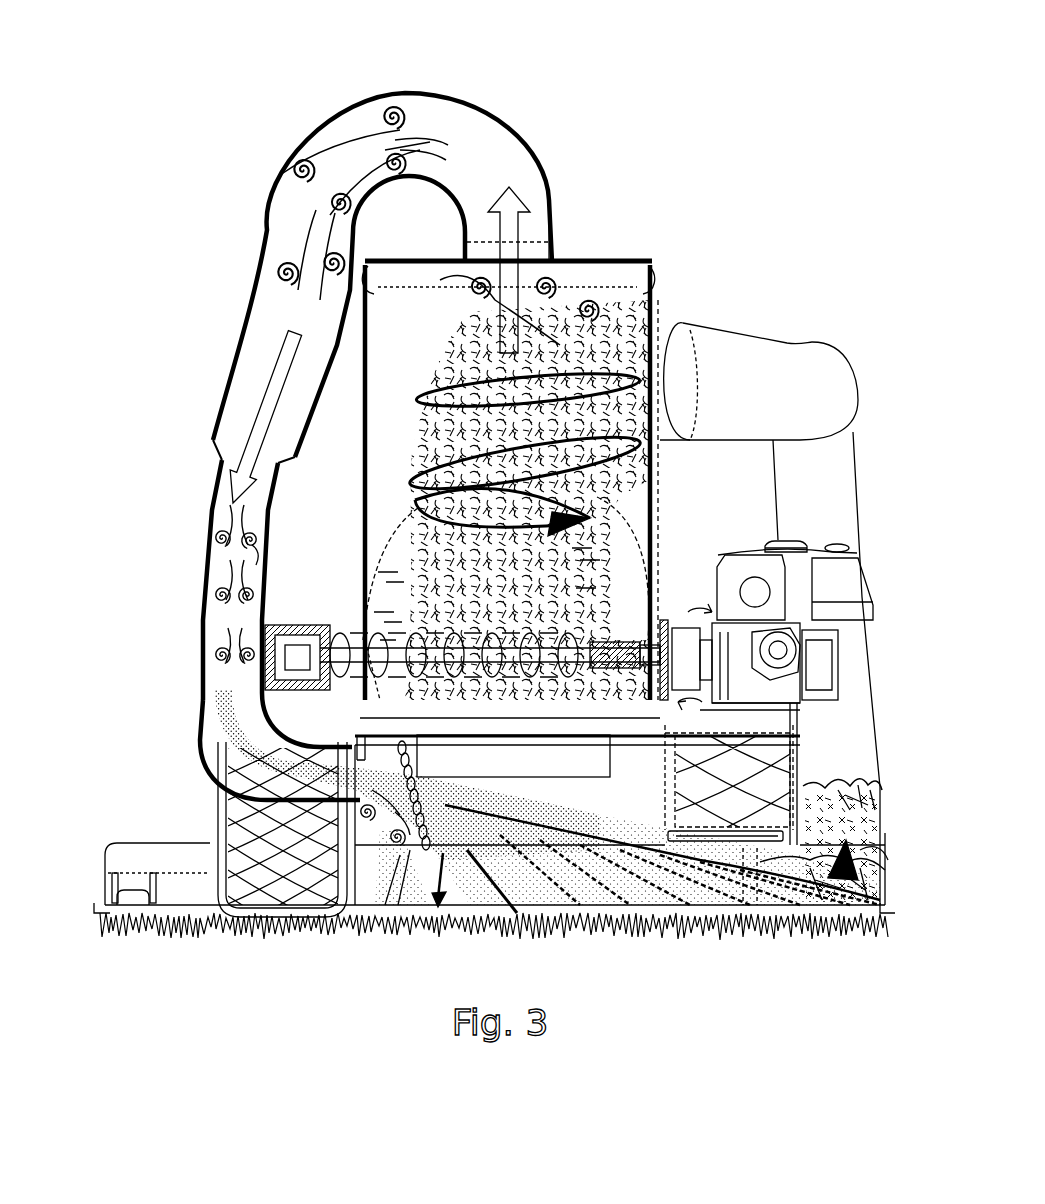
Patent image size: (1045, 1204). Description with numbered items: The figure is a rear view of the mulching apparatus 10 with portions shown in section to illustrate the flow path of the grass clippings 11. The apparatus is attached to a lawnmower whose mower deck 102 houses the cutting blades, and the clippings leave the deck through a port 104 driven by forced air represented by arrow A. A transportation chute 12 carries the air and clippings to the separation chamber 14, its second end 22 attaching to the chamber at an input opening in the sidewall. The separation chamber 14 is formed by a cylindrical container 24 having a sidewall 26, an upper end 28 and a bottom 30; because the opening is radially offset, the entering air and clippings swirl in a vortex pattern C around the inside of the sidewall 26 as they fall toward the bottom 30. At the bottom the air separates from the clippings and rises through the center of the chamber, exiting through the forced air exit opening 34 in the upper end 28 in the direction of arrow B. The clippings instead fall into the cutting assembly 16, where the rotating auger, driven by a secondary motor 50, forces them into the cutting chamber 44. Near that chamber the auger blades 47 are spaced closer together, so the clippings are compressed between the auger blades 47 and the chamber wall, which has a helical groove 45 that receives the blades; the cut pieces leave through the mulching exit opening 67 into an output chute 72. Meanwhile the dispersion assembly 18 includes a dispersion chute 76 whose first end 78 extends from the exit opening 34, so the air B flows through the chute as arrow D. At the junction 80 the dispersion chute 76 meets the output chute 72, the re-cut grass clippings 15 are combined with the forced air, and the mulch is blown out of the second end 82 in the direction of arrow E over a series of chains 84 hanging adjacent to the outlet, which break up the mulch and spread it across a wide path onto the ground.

The mulching apparatus 10 is at (609, 103).
The grass clippings 11 is at (858, 782).
The transportation chute 12 is at (789, 383).
The separation chamber 14 is at (652, 425).
The re-cut grass clippings 15 is at (408, 905).
The cutting assembly 16 is at (263, 625).
The dispersion assembly 18 is at (215, 310).
The second end 22 is at (718, 350).
The cylindrical container 24 is at (365, 440).
The sidewall 26 is at (362, 474).
The upper end 28 is at (637, 258).
The bottom 30 is at (582, 728).
The forced air exit opening 34 is at (488, 266).
The cutting chamber 44 is at (232, 772).
The helical groove 45 is at (250, 545).
The auger blades 47 is at (355, 640).
The secondary motor 50 is at (790, 645).
The mulching exit opening 67 is at (268, 652).
The output chute 72 is at (212, 745).
The dispersion chute 76 is at (275, 235).
The first end 78 is at (549, 262).
The junction 80 is at (270, 637).
The second end 82 is at (365, 772).
The chains 84 is at (417, 793).
The mower deck 102 is at (140, 862).
The port 104 is at (858, 870).
The forced air exiting the mower deck A is at (845, 837).
The forced air exit direction B is at (507, 250).
The vortex pattern C is at (425, 503).
The forced air through dispersion chute D is at (280, 385).
The mulch discharge direction E is at (468, 848).